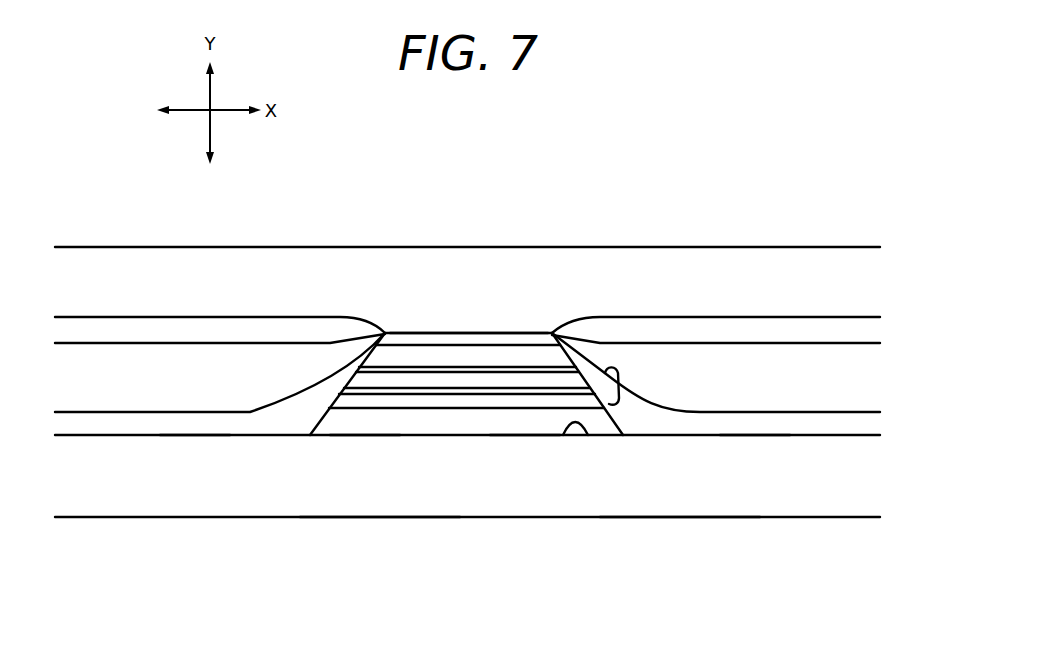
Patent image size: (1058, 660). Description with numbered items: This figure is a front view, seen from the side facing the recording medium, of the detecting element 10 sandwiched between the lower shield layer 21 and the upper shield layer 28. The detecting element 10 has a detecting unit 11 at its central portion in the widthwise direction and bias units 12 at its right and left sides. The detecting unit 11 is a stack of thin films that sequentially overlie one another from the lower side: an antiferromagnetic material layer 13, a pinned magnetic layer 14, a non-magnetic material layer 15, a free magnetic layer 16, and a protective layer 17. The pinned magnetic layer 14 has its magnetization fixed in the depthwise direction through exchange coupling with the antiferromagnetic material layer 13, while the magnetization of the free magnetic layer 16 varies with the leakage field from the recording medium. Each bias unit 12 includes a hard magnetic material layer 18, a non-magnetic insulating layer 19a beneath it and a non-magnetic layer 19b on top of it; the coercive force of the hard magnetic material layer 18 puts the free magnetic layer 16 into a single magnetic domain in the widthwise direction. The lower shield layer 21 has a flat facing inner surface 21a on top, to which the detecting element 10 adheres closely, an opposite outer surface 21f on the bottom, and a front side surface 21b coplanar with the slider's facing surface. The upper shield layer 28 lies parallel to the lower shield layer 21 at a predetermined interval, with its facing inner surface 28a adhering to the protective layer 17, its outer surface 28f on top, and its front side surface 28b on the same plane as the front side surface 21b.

The detecting element 10 is at (358, 450).
The detecting unit 11 is at (523, 452).
The bias unit 12 is at (188, 452).
The antiferromagnetic material layer 13 is at (442, 420).
The pinned magnetic layer 14 is at (627, 390).
The non-magnetic material layer 15 is at (538, 372).
The free magnetic layer 16 is at (455, 357).
The protective layer 17 is at (482, 332).
The hard magnetic material layer 18 is at (135, 363).
The non-magnetic insulating layer 19a is at (102, 420).
The non-magnetic layer 19b is at (228, 335).
The lower shield layer 21 is at (260, 508).
The facing inner surface 21a is at (588, 435).
The front side surface 21b is at (383, 500).
The outer surface 21f is at (678, 517).
The upper shield layer 28 is at (285, 268).
The facing inner surface 28a is at (427, 338).
The front side surface 28b is at (320, 273).
The outer surface 28f is at (582, 246).